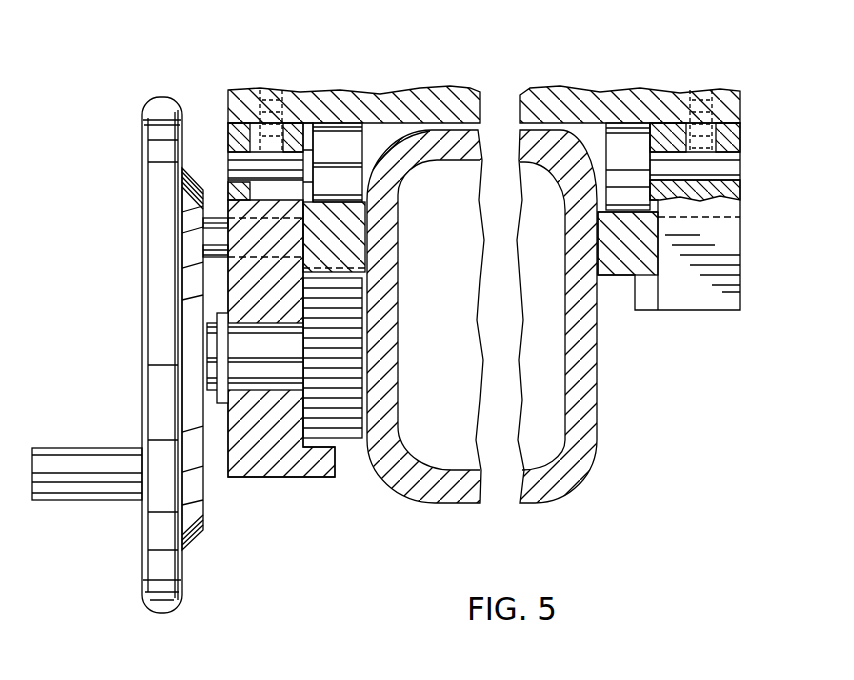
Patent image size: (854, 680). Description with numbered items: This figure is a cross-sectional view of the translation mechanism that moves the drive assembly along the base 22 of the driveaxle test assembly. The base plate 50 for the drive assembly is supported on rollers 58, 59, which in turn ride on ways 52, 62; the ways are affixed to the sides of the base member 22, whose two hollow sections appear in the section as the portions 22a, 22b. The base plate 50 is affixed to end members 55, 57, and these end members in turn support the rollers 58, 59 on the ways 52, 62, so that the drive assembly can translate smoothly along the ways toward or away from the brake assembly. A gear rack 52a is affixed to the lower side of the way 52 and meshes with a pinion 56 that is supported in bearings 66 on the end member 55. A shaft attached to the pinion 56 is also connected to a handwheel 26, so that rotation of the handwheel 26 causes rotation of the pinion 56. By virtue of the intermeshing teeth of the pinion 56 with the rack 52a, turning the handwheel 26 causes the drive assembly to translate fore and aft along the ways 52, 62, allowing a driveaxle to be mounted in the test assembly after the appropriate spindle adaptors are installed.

The base 22 is at (527, 338).
The first tube section 22a is at (395, 398).
The second tube section 22b is at (597, 410).
The handwheel 26 is at (165, 612).
The base plate 50 is at (422, 98).
The way 52 is at (338, 243).
The gear rack 52a is at (345, 272).
The end member 55 is at (268, 465).
The pinion 56 is at (345, 425).
The end member 57 is at (697, 295).
The roller 58 is at (337, 128).
The roller 59 is at (628, 128).
The way 62 is at (630, 258).
The bearings 66 is at (255, 343).